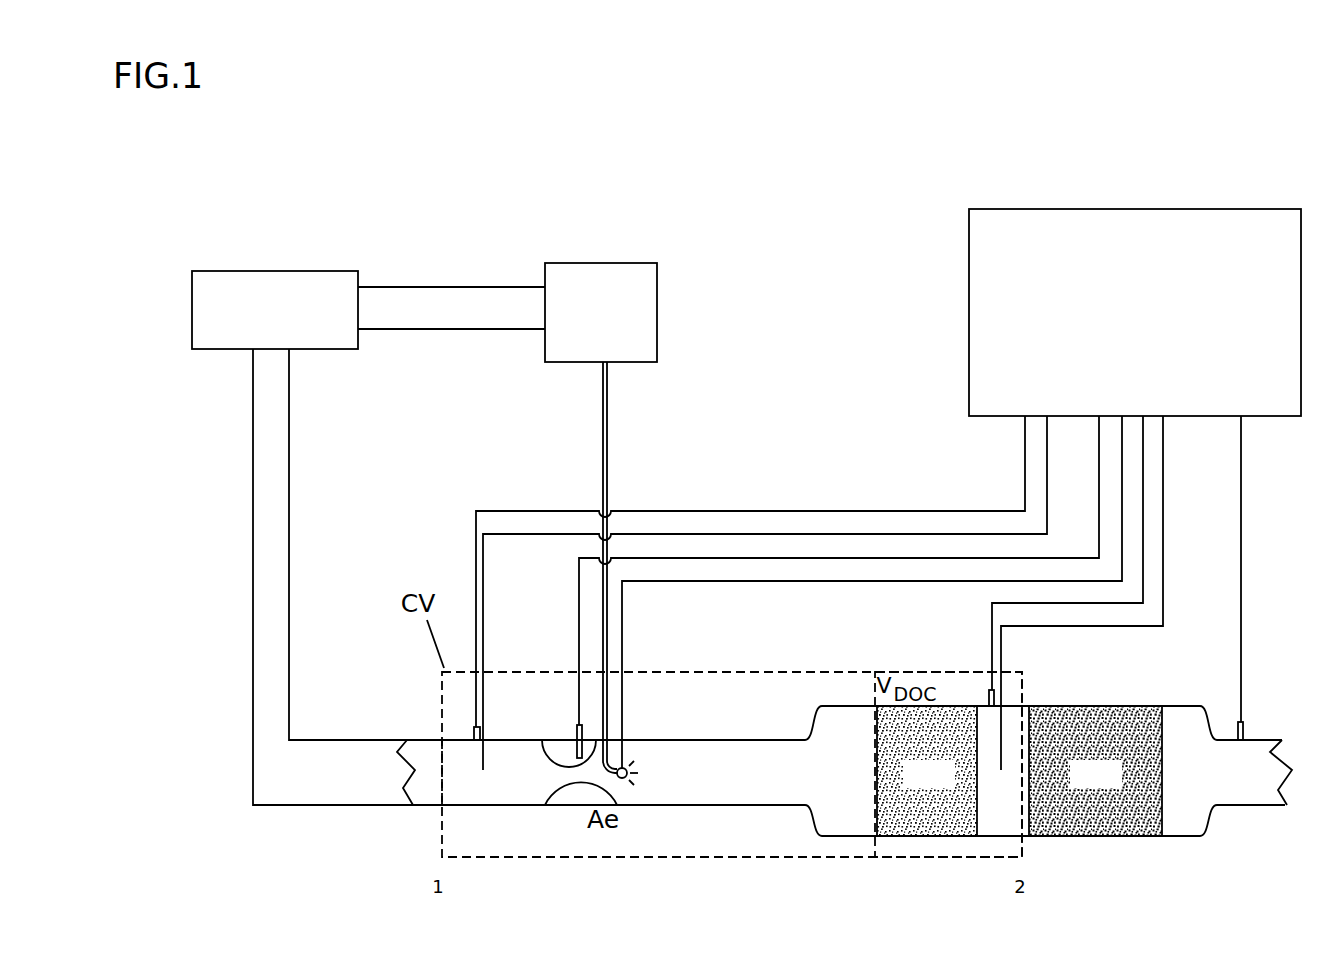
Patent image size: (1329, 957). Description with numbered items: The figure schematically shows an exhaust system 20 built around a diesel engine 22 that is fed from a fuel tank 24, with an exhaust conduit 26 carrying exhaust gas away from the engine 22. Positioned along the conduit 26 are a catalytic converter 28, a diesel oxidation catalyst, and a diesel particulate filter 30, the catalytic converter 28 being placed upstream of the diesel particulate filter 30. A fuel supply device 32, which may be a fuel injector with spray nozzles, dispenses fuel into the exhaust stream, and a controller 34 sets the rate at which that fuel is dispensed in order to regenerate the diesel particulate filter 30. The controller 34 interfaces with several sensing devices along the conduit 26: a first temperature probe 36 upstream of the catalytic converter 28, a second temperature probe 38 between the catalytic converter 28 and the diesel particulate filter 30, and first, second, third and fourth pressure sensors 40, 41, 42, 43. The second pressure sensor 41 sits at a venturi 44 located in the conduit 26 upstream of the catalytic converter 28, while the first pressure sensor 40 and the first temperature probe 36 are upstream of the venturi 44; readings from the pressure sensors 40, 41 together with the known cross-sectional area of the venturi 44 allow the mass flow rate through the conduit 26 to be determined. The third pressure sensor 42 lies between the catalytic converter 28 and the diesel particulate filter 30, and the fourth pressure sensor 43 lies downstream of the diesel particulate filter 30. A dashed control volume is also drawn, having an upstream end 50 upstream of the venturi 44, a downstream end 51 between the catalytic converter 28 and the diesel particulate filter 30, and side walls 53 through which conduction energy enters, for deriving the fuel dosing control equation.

The exhaust system 20 is at (466, 198).
The engine 22 is at (314, 270).
The fuel tank 24 is at (634, 262).
The exhaust conduit 26 is at (252, 601).
The catalytic converter 28 is at (922, 830).
The diesel particulate filter 30 is at (1097, 836).
The fuel supply device 32 is at (626, 780).
The controller 34 is at (1244, 208).
The first temperature probe 36 is at (482, 772).
The second temperature probe 38 is at (1001, 770).
The first pressure sensor 40 is at (473, 735).
The second pressure sensor 41 is at (576, 733).
The third pressure sensor 42 is at (988, 690).
The fourth pressure sensor 43 is at (1246, 735).
The venturi 44 is at (578, 782).
The upstream end 50 is at (440, 823).
The downstream end 51 is at (1024, 690).
The side walls 53 is at (695, 858).